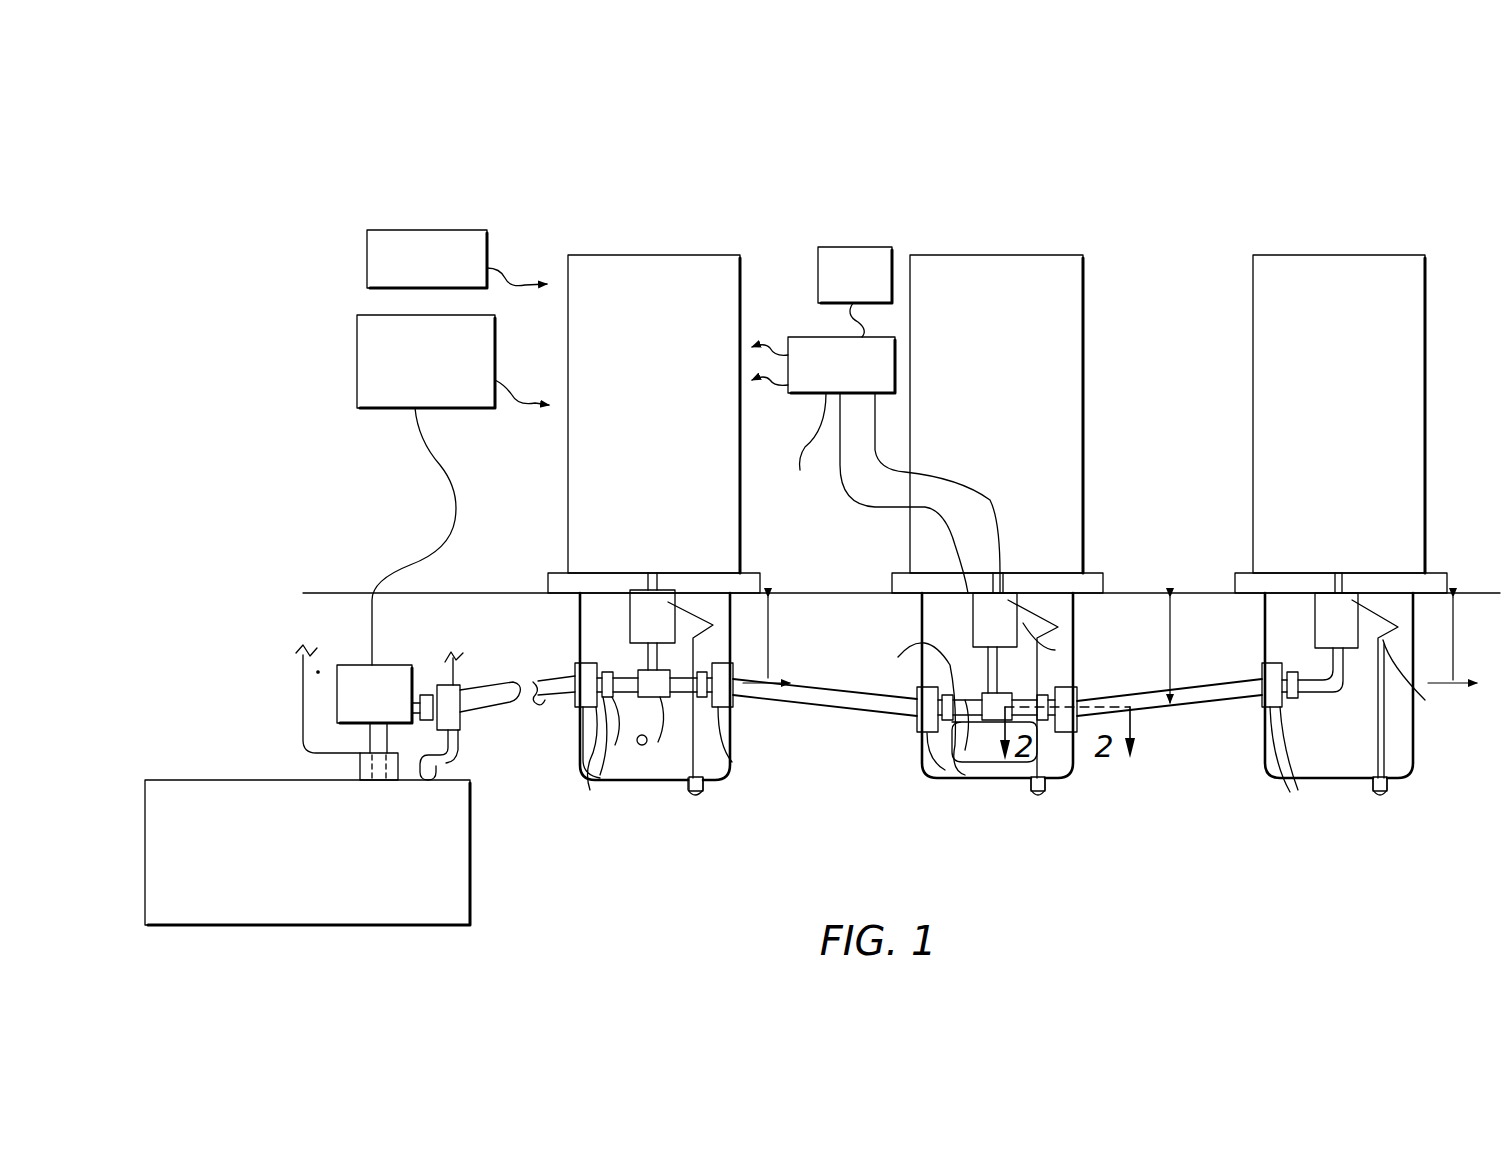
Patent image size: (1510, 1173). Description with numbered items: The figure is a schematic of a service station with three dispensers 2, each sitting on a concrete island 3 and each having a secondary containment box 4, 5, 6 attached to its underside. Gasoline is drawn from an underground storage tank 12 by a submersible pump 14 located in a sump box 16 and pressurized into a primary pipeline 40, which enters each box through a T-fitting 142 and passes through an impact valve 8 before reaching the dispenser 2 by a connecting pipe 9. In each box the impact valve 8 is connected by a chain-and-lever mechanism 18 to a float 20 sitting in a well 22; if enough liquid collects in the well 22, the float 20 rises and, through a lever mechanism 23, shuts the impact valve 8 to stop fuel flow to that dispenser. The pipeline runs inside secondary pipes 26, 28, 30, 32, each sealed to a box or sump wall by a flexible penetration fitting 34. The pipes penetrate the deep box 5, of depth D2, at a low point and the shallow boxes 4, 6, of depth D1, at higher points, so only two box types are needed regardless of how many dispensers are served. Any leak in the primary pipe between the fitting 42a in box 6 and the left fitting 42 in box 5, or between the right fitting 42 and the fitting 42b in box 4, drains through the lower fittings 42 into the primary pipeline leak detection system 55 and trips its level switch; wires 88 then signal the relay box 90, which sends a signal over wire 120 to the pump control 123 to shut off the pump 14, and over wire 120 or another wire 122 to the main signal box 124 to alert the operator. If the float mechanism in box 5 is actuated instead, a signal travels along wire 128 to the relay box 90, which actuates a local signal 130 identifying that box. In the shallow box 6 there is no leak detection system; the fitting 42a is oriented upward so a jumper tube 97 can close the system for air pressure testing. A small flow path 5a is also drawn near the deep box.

The dispenser 2 is at (680, 255).
The island 3 is at (757, 573).
The secondary containment box 4 is at (1266, 781).
The secondary containment box 5 is at (916, 603).
The flow path 5a is at (1060, 700).
The secondary containment box 6 is at (575, 615).
The impact valve 8 is at (625, 612).
The connecting pipe 9 is at (655, 578).
The underground storage tank 12 is at (470, 890).
The submersible pump 14 is at (400, 664).
The sump box 16 is at (298, 690).
The chain-and-lever mechanism 18 is at (1045, 605).
The float 20 is at (705, 790).
The well 22 is at (696, 798).
The lever mechanism 23 is at (1063, 651).
The secondary pipe 26 is at (1195, 714).
The secondary pipe 28 is at (870, 714).
The secondary pipe 30 is at (566, 682).
The secondary pipe 32 is at (505, 710).
The penetration fitting 34 is at (440, 666).
The primary pipeline 40 is at (1085, 672).
The fitting 42 is at (456, 746).
The fitting 42a is at (592, 792).
The fitting 42b is at (1290, 792).
The primary pipeline leak detection system 55 is at (967, 795).
The wires 88 is at (860, 508).
The relay box 90 is at (841, 403).
The tube 97 is at (613, 775).
The wire 120 is at (521, 410).
The wire 122 is at (510, 266).
The pump control 123 is at (357, 378).
The main signal box 124 is at (388, 230).
The wire 128 is at (985, 492).
The local signal 130 is at (860, 247).
The T-fitting 142 is at (945, 772).
The depth D1 is at (1110, 640).
The depth D2 is at (1178, 650).